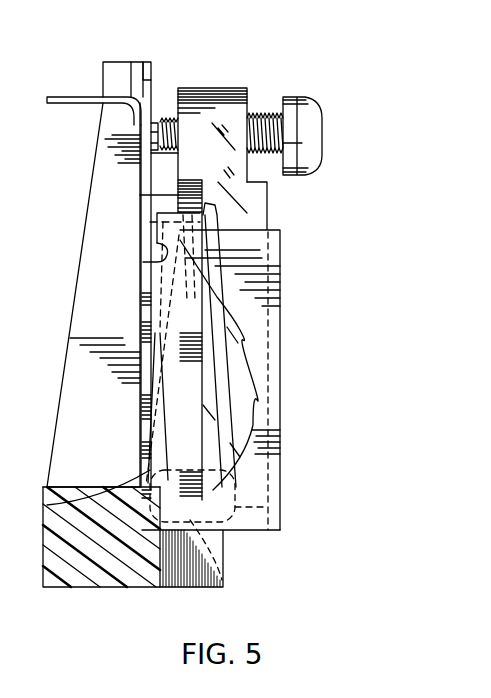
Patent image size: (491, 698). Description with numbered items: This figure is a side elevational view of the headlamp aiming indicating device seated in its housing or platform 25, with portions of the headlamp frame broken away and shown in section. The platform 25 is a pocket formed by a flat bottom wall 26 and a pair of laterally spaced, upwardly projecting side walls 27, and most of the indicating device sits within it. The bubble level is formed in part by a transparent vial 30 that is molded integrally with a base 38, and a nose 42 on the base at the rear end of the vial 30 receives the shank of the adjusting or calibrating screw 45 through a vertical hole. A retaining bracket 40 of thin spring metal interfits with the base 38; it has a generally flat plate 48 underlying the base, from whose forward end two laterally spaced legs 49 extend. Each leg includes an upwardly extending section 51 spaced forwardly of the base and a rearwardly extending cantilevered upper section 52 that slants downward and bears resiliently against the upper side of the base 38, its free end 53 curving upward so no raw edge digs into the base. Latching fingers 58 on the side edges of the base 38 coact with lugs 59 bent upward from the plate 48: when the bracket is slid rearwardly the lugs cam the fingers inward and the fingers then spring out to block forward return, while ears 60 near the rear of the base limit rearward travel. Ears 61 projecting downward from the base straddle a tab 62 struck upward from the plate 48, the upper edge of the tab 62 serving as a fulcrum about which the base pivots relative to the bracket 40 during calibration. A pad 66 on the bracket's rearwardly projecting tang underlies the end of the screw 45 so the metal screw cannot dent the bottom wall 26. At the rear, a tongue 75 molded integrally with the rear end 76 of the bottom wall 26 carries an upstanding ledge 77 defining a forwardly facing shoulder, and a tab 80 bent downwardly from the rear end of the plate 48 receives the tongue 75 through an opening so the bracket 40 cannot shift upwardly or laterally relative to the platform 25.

The platform 25 is at (82, 565).
The bottom wall 26 is at (103, 290).
The side walls 27 is at (258, 493).
The transparent vial 30 is at (262, 204).
The base 38 is at (188, 400).
The retaining bracket 40 is at (138, 233).
The nose 42 is at (221, 97).
The adjusting screw 45 is at (311, 119).
The plate 48 is at (143, 252).
The legs 49 is at (240, 420).
The upwardly extending section 51 is at (222, 579).
The cantilevered upper section 52 is at (220, 382).
The free end 53 is at (140, 222).
The latching fingers 58 is at (182, 362).
The lugs 59 is at (150, 300).
The ears 60 is at (180, 195).
The ears 61 is at (47, 503).
The tab 62 is at (140, 465).
The pad 66 is at (150, 97).
The tongue 75 is at (110, 75).
The rear end 76 is at (120, 100).
The ledge 77 is at (150, 63).
The tab 80 is at (72, 103).